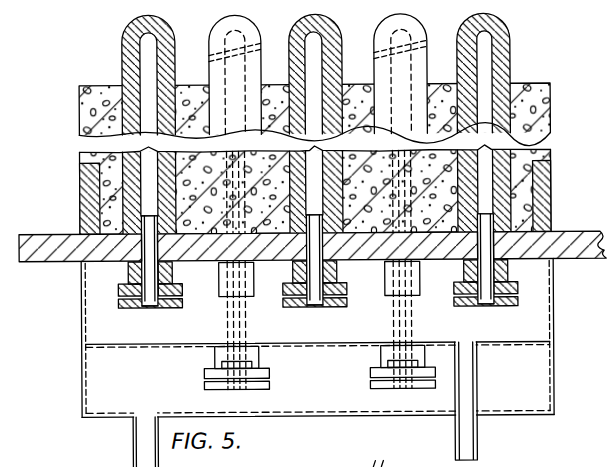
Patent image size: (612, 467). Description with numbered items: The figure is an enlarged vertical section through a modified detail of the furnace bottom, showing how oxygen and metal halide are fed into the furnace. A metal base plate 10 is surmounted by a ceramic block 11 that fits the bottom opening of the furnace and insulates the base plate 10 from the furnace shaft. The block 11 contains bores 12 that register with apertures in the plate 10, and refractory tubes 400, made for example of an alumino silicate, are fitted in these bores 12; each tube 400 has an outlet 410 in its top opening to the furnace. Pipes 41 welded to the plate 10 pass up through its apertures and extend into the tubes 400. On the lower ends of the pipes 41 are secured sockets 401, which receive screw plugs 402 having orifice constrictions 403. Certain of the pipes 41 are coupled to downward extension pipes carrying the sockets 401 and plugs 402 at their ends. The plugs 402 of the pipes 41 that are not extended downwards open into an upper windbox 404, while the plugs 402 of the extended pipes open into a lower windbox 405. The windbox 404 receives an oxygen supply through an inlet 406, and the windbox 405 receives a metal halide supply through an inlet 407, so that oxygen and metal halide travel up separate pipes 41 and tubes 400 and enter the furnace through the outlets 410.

The base plate 10 is at (582, 215).
The ceramic block 11 is at (539, 107).
The bore 12 is at (458, 51).
The pipe 41 is at (138, 249).
The refractory tube 400 is at (130, 112).
The socket 401 is at (128, 271).
The screw plug 402 is at (118, 301).
The orifice constriction 403 is at (152, 306).
The windbox 404 is at (337, 338).
The windbox 405 is at (340, 390).
The inlet 406 is at (470, 438).
The inlet 407 is at (131, 448).
The outlet 410 is at (123, 58).